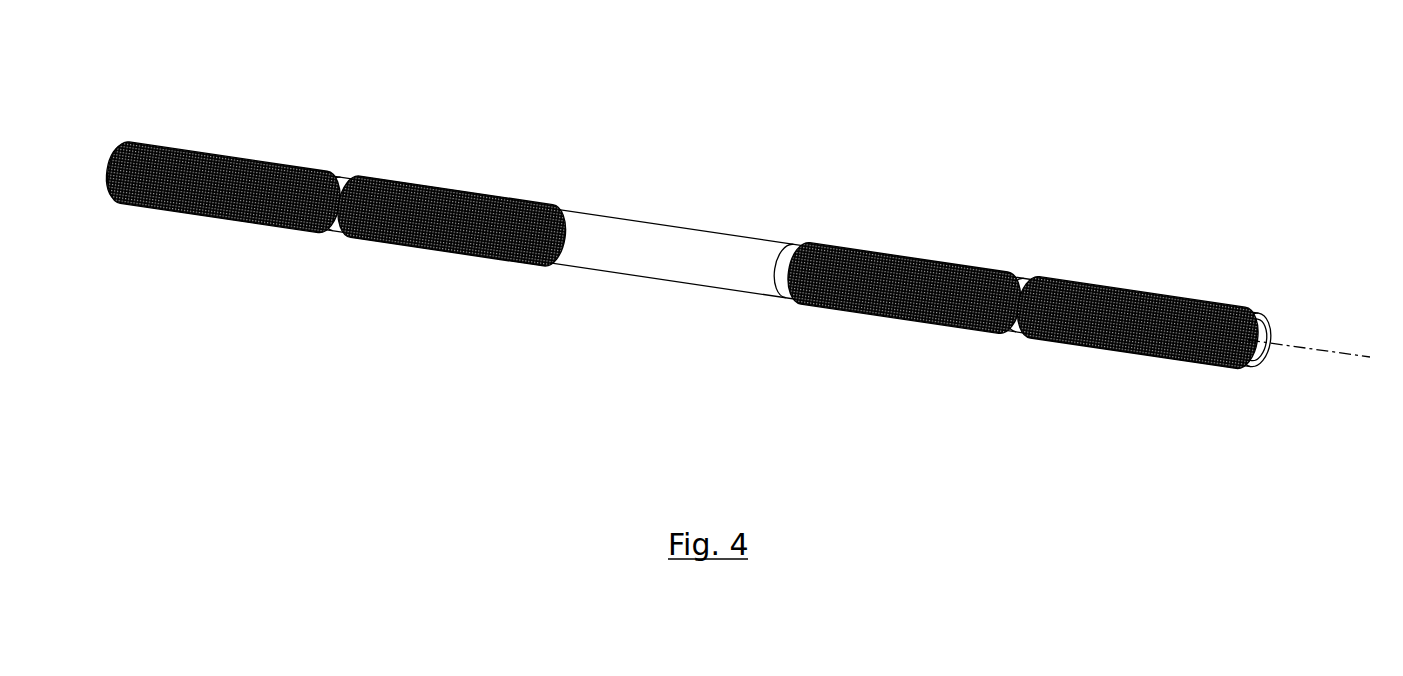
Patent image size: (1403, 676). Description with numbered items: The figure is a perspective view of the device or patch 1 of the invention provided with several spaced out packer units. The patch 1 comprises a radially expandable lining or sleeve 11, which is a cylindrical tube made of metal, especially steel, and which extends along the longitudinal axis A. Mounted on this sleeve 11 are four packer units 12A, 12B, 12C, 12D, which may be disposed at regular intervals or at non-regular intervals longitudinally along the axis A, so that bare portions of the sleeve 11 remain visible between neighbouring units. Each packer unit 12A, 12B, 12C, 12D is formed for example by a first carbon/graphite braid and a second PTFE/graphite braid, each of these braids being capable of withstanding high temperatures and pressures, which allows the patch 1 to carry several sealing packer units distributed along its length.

The patch 1 is at (713, 278).
The sleeve 11 is at (1248, 312).
The packer unit 12A is at (219, 240).
The packer unit 12B is at (448, 276).
The packer unit 12C is at (893, 348).
The packer unit 12D is at (1132, 376).
The axis A is at (1333, 352).